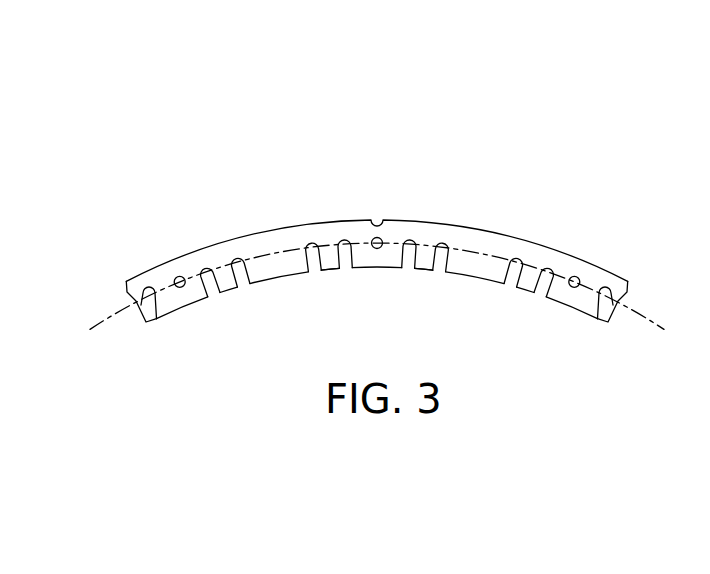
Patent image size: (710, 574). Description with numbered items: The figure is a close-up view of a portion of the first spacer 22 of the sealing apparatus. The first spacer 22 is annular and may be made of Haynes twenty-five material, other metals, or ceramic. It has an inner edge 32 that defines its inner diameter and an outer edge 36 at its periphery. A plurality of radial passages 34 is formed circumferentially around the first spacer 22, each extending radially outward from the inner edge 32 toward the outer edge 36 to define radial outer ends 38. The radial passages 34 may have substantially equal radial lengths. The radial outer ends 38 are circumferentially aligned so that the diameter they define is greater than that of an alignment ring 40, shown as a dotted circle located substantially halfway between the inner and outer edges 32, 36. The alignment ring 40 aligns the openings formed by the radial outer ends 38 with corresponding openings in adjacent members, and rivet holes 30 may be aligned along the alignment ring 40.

The first spacer 22 is at (377, 208).
The rivet holes 30 is at (578, 277).
The inner edge 32 is at (478, 278).
The radial passages 34 is at (348, 268).
The outer edge 36 is at (521, 238).
The radial outer ends 38 is at (441, 243).
The alignment ring 40 is at (274, 253).